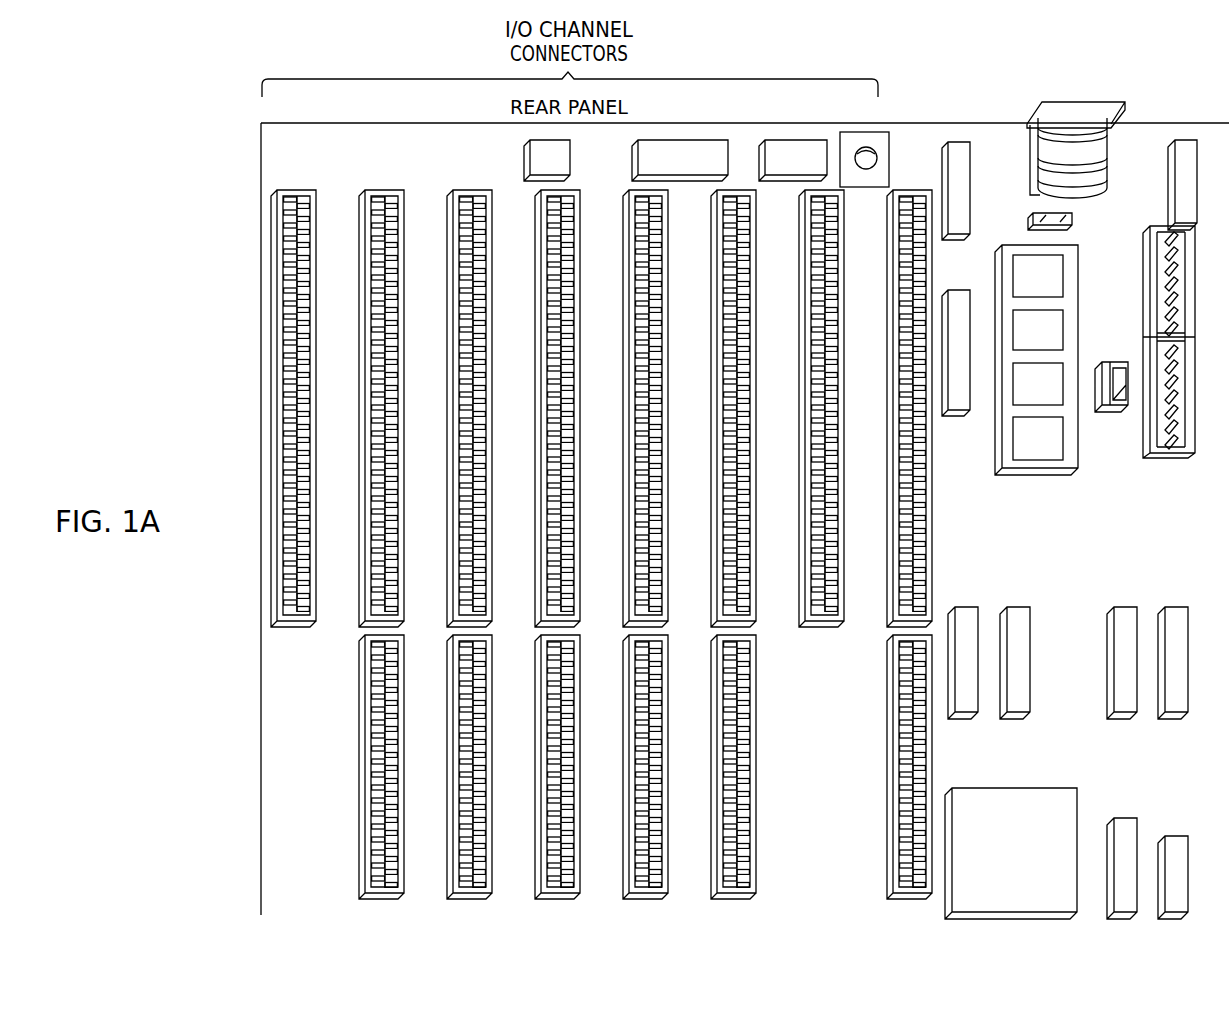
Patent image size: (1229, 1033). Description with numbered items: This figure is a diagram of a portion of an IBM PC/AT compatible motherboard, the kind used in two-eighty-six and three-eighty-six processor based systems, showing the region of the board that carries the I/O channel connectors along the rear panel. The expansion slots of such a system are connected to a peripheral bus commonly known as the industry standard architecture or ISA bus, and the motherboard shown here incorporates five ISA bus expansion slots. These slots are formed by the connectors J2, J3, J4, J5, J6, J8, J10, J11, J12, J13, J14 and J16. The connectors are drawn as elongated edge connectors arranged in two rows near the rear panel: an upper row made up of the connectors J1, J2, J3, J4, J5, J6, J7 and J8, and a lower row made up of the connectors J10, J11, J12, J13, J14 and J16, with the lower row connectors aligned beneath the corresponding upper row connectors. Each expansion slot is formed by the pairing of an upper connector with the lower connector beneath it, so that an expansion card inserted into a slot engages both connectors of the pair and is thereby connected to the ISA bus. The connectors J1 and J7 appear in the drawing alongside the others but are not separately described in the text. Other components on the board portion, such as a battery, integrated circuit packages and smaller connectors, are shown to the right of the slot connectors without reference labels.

The I/O channel connector J1 is at (307, 408).
The connector J2 is at (395, 408).
The connector J3 is at (483, 408).
The connector J4 is at (571, 408).
The connector J5 is at (659, 408).
The connector J6 is at (747, 408).
The I/O channel connector J7 is at (835, 408).
The connector J8 is at (923, 408).
The connector J10 is at (395, 767).
The connector J11 is at (483, 767).
The connector J12 is at (571, 767).
The connector J13 is at (659, 767).
The connector J14 is at (747, 767).
The connector J16 is at (923, 767).